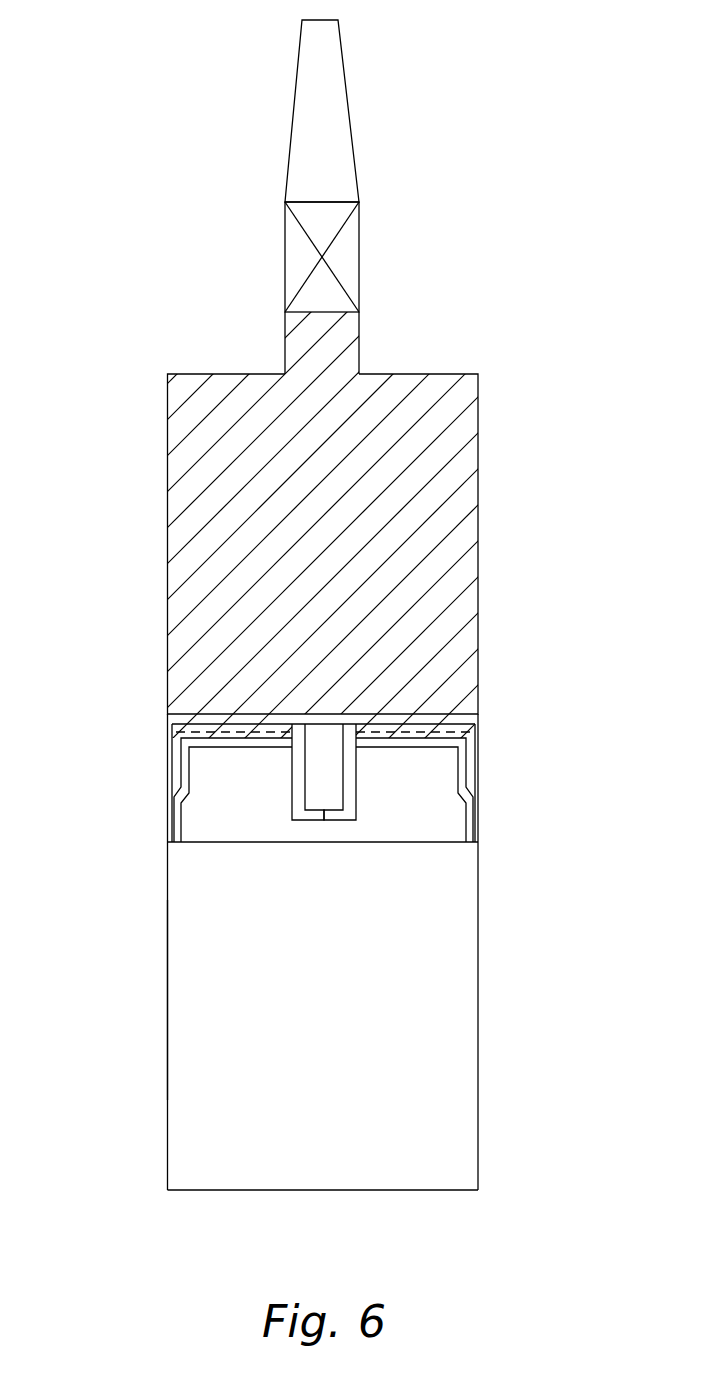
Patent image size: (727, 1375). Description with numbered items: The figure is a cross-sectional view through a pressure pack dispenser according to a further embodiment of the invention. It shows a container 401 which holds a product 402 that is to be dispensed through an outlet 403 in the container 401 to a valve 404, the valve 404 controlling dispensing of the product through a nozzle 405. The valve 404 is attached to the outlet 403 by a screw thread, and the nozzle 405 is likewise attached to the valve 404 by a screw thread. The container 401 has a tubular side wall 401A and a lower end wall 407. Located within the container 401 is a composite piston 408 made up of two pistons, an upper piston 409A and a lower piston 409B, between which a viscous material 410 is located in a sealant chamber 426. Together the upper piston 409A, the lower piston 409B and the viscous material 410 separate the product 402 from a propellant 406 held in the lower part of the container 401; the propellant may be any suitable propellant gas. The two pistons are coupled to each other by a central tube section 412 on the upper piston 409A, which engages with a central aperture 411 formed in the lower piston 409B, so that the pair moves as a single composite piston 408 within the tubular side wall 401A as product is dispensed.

The container 401 is at (479, 1023).
The tubular side wall 401A is at (168, 1037).
The product 402 is at (452, 497).
The outlet 403 is at (360, 347).
The valve 404 is at (343, 263).
The nozzle 405 is at (335, 147).
The propellant 406 is at (415, 1120).
The lower end wall 407 is at (288, 1190).
The composite piston 408 is at (158, 703).
The upper piston 409A is at (480, 734).
The lower piston 409B is at (457, 830).
The viscous material 410 is at (170, 757).
The central aperture 411 is at (293, 787).
The central tube section 412 is at (343, 787).
The sealant chamber 426 is at (440, 728).